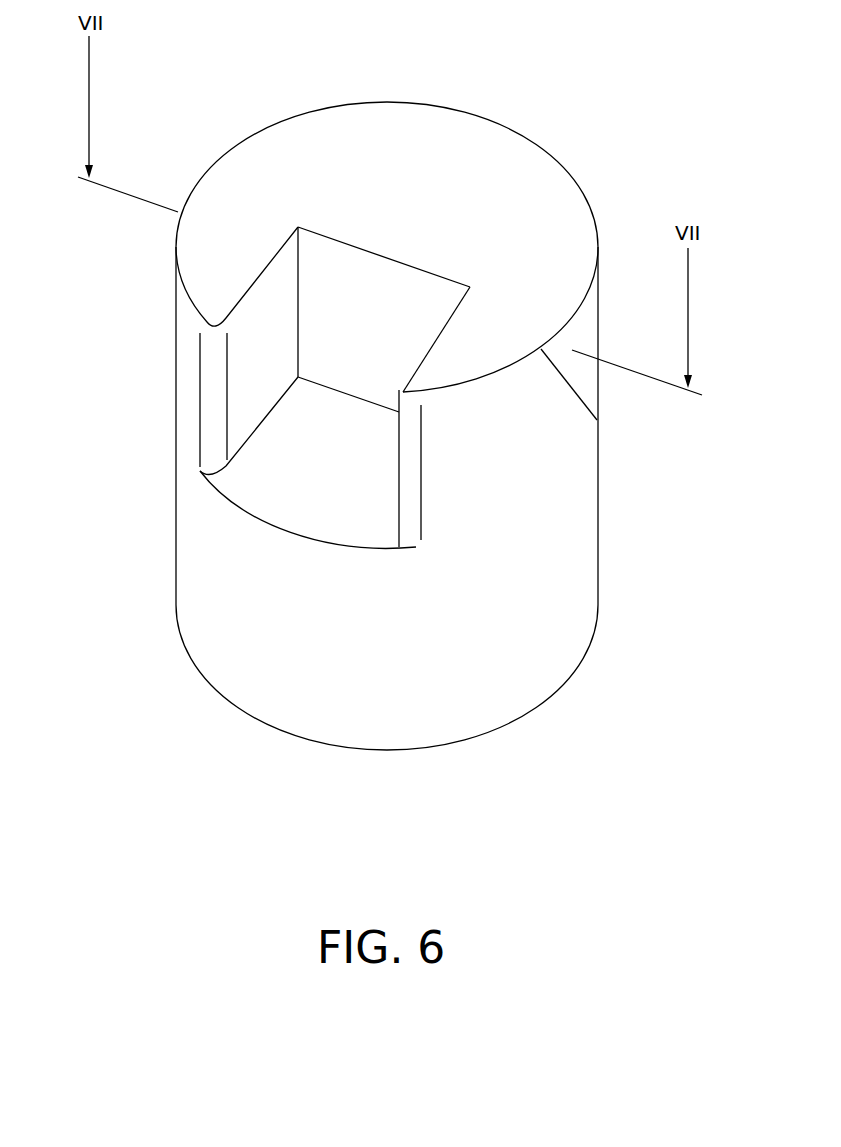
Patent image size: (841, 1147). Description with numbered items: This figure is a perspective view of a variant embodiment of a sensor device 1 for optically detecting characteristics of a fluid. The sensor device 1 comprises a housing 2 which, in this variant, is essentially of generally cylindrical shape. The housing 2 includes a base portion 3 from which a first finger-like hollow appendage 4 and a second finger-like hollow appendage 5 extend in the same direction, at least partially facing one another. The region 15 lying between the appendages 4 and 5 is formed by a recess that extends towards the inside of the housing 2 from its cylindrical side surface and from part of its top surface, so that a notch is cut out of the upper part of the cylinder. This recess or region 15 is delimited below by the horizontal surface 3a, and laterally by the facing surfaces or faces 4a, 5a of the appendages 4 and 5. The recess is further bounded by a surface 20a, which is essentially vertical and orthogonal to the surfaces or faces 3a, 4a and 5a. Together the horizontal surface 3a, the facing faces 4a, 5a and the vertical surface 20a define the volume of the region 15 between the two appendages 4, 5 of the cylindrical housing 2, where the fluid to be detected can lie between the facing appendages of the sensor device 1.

The sensor device 1 is at (548, 141).
The housing 2 is at (238, 711).
The base portion 3 is at (393, 702).
The horizontal surface 3a is at (310, 512).
The first finger-like hollow appendage 4 is at (214, 254).
The facing surface of first appendage 4a is at (253, 353).
The second finger-like hollow appendage 5 is at (596, 420).
The facing surface of second appendage 5a is at (440, 322).
The region 15 is at (328, 439).
The vertical surface 20a is at (346, 272).